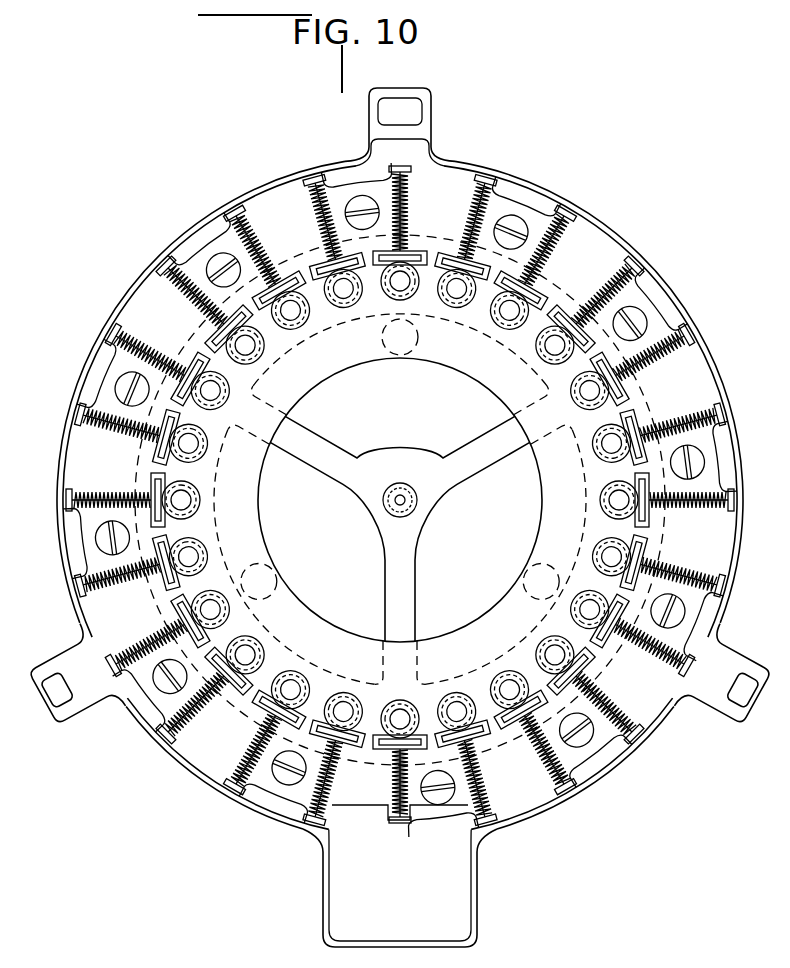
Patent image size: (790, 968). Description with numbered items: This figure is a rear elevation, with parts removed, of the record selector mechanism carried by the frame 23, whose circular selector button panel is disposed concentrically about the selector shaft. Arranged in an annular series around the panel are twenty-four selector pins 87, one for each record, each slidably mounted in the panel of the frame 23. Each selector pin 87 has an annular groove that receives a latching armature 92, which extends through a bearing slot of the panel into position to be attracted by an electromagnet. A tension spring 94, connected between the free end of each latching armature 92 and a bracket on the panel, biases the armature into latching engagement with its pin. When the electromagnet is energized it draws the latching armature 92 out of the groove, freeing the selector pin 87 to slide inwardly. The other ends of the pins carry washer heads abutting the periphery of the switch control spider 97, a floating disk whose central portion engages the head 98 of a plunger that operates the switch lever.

The frame 23 is at (594, 247).
The tension spring 94 is at (628, 290).
The selector pin 87 is at (578, 389).
The latching armature 92 is at (612, 400).
The switch control spider 97 is at (316, 460).
The head 98 is at (386, 508).